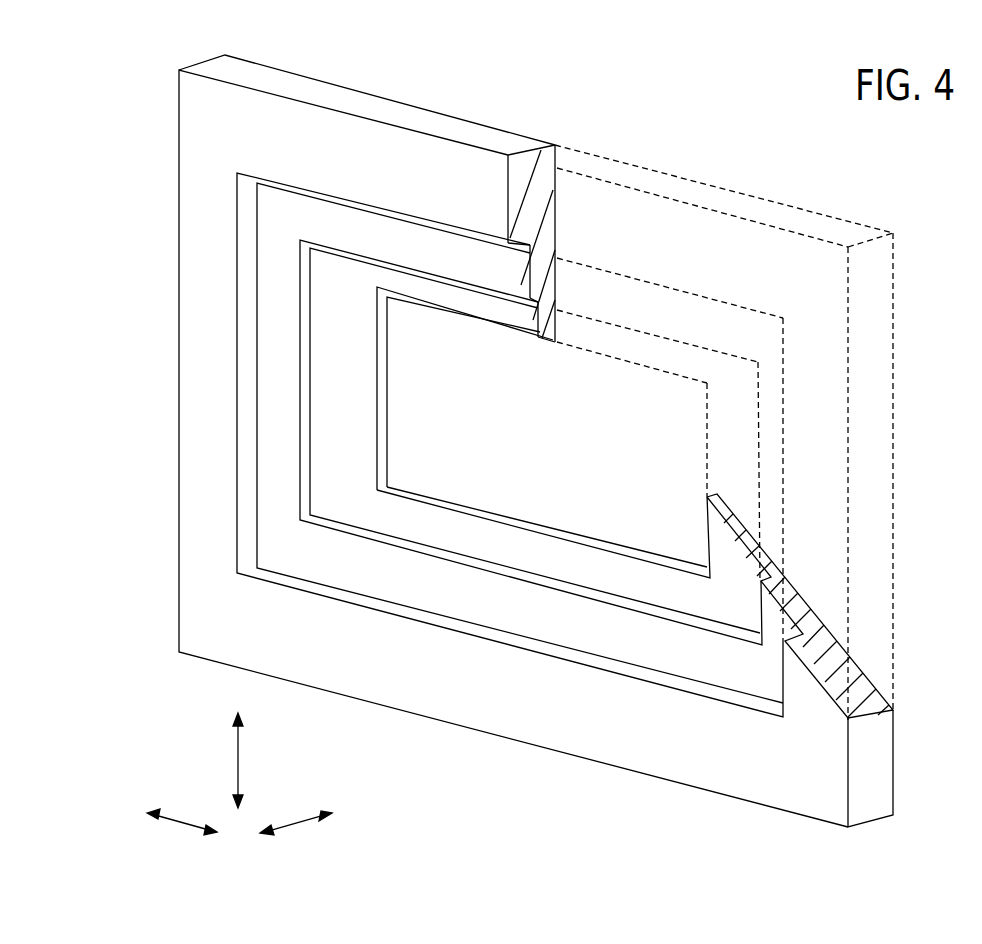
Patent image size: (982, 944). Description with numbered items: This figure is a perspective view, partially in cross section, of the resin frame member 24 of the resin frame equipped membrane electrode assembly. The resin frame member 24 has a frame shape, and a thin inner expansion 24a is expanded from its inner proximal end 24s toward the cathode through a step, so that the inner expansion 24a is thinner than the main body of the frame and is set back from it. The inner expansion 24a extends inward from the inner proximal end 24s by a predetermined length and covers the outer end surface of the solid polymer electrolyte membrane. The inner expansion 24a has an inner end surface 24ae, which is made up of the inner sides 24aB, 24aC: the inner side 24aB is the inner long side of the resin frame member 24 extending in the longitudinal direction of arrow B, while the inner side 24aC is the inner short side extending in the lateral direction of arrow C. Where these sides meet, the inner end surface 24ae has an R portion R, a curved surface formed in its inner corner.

The resin frame member 24 is at (827, 147).
The inner proximal end 24s is at (247, 405).
The inner expansion 24a is at (531, 553).
The inner side 24aC is at (384, 384).
The inner side 24aB is at (488, 517).
The inner end surface 24ae is at (573, 532).
The R portion R is at (521, 332).